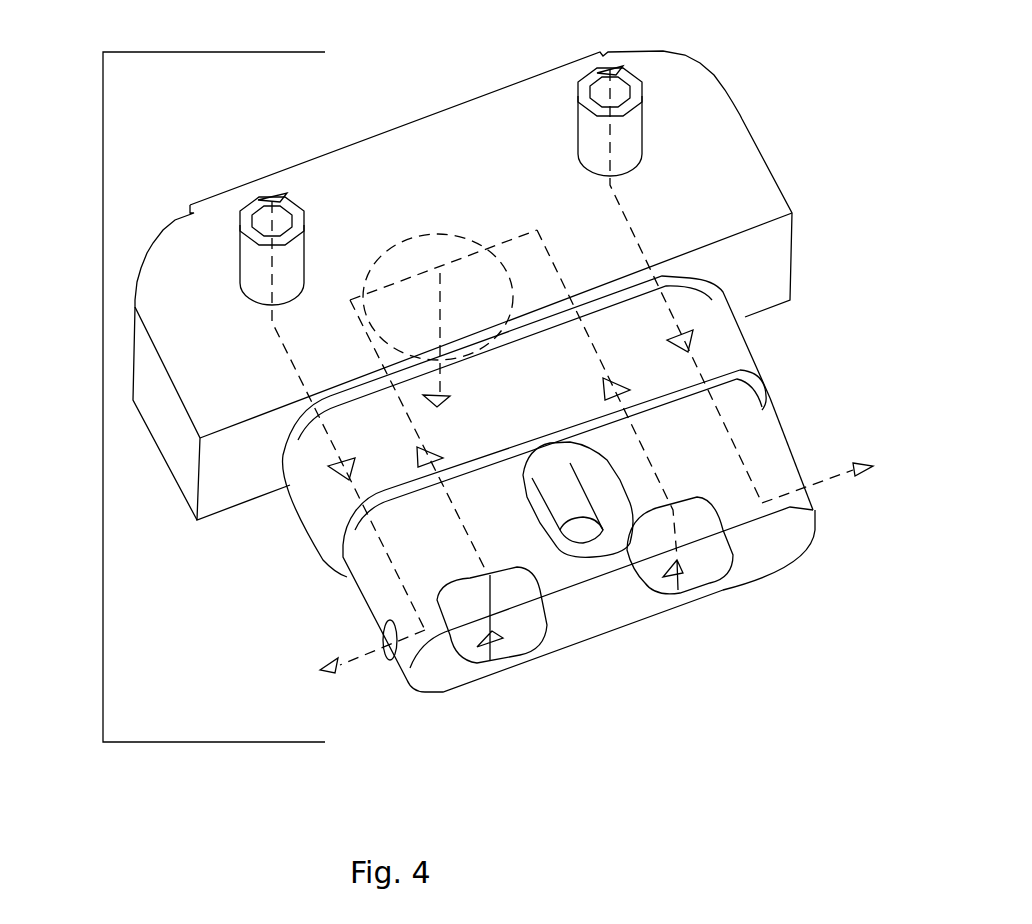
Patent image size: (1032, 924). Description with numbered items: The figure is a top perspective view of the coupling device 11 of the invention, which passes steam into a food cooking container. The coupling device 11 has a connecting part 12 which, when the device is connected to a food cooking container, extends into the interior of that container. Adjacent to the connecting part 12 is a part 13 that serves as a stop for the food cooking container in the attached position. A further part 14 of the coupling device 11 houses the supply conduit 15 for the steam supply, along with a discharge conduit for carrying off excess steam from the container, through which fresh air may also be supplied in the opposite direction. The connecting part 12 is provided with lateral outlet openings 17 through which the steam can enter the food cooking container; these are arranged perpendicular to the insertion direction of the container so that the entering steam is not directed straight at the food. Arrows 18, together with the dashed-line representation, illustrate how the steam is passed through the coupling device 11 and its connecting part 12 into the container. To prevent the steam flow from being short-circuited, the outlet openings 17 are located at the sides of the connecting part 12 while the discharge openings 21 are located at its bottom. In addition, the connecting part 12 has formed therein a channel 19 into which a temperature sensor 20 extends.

The coupling device 11 is at (103, 398).
The connecting part 12 is at (743, 431).
The part serving as stop 13 is at (728, 340).
The part of coupling device 14 is at (732, 138).
The supply conduit 15 is at (642, 125).
The lateral outlet openings 17 is at (385, 640).
The arrows 18 is at (612, 65).
The channel 19 is at (610, 490).
The temperature sensor 20 is at (560, 517).
The discharge openings 21 is at (517, 640).